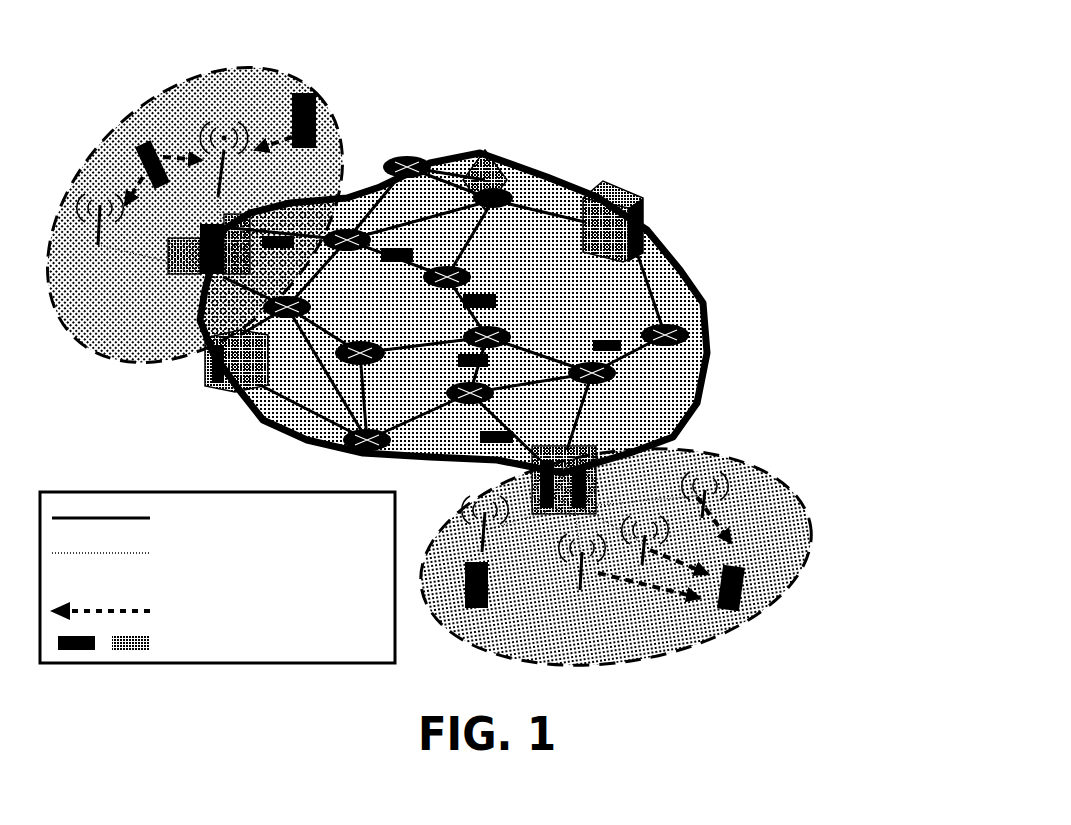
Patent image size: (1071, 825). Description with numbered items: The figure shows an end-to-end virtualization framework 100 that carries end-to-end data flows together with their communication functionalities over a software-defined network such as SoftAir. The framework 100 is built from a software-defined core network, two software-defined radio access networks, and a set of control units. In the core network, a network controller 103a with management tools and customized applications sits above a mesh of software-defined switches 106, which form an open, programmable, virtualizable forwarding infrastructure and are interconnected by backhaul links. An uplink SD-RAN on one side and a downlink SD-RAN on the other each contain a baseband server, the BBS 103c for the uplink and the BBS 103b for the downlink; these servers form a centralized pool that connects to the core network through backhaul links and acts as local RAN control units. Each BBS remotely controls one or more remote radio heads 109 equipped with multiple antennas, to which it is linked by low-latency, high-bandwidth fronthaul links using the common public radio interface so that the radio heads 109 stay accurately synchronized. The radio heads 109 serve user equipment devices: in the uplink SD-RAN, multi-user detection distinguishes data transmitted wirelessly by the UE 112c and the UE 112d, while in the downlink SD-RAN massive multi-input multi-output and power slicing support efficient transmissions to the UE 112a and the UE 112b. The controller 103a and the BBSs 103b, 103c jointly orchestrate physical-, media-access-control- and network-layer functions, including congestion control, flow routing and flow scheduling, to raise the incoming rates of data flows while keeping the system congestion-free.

The end-to-end virtualization framework 100 is at (810, 96).
The network controller 103a is at (197, 444).
The BBS 103b is at (643, 478).
The BBS 103c is at (242, 303).
The software-defined switch 106 is at (340, 366).
The remote radio head 109 is at (570, 614).
The user equipment 112a is at (795, 605).
The user equipment 112b is at (502, 639).
The user equipment 112c is at (180, 223).
The user equipment 112d is at (320, 178).